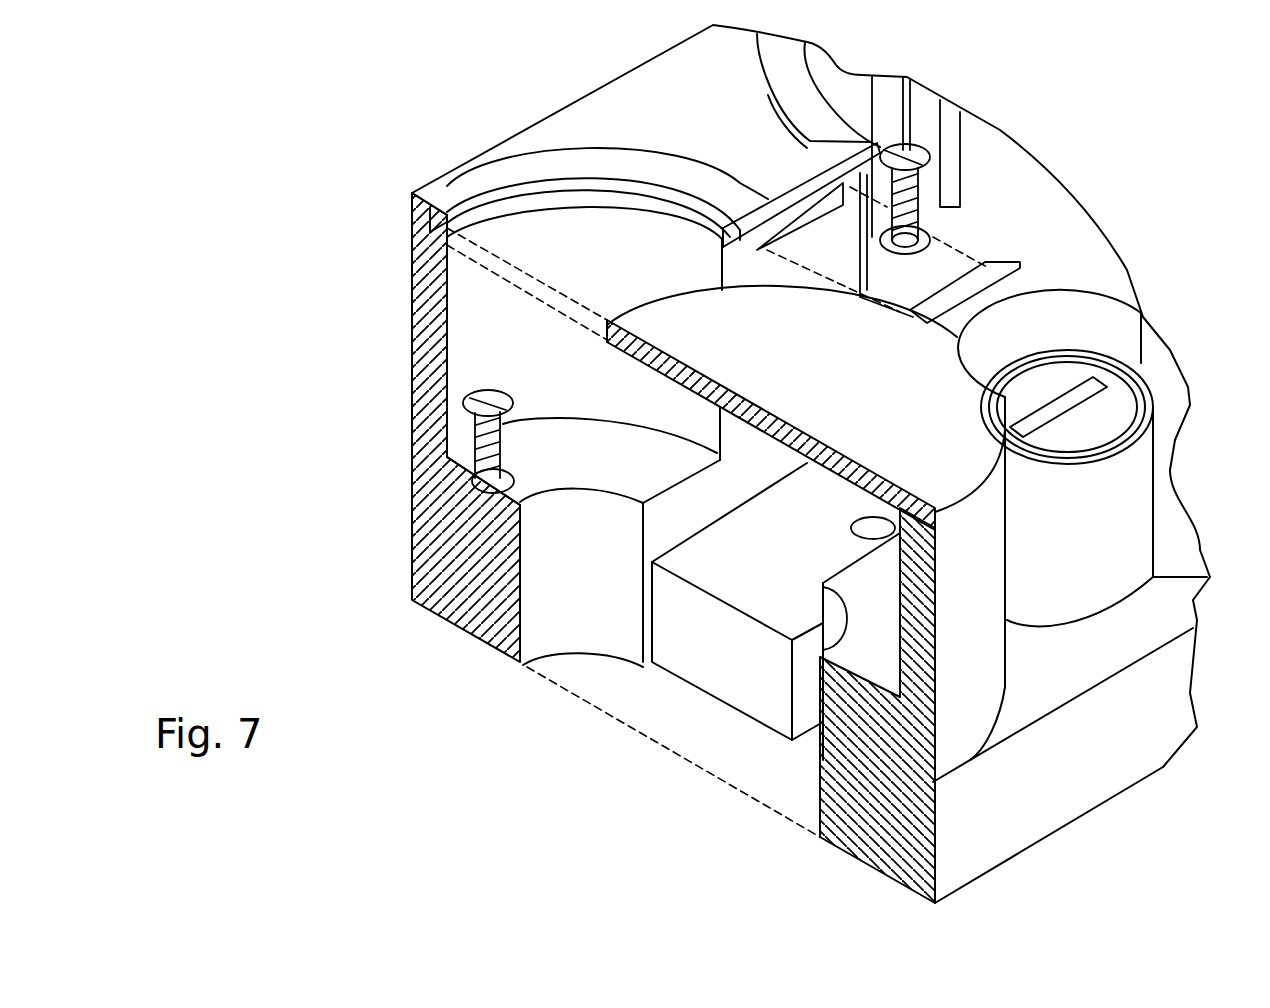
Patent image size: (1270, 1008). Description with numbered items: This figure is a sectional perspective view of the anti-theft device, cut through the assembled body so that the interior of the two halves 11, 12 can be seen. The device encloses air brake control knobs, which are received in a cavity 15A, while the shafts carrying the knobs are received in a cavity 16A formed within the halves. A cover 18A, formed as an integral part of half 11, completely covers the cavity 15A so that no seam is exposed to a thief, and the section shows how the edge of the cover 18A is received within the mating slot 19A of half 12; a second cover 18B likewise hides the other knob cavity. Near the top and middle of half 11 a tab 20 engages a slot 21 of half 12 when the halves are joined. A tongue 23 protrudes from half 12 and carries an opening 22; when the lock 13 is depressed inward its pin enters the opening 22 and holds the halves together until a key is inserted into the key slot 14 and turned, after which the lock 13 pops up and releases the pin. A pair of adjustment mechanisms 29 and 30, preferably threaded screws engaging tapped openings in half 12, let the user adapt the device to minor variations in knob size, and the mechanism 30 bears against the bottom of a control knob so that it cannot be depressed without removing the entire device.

The half 11 is at (1100, 680).
The half 12 is at (600, 92).
The lock 13 is at (1162, 505).
The key slot 14 is at (1047, 420).
The cavity 15A is at (481, 333).
The cavity 16A is at (565, 580).
The cover 18A is at (713, 288).
The cover 18B is at (967, 125).
The slot 19A is at (522, 208).
The tab 20 is at (953, 288).
The slot 21 is at (800, 211).
The opening 22 is at (865, 513).
The tongue 23 is at (697, 693).
The adjustment mechanism 29 is at (513, 393).
The adjustment mechanism 30 is at (905, 220).